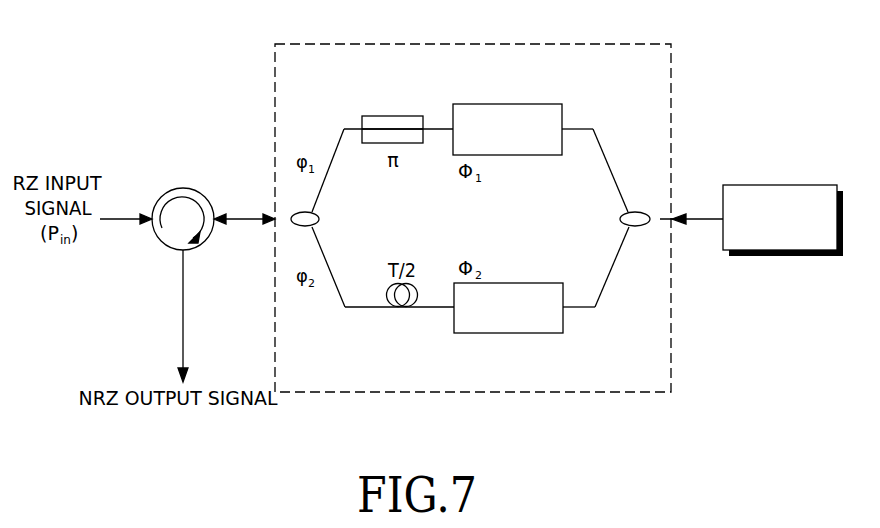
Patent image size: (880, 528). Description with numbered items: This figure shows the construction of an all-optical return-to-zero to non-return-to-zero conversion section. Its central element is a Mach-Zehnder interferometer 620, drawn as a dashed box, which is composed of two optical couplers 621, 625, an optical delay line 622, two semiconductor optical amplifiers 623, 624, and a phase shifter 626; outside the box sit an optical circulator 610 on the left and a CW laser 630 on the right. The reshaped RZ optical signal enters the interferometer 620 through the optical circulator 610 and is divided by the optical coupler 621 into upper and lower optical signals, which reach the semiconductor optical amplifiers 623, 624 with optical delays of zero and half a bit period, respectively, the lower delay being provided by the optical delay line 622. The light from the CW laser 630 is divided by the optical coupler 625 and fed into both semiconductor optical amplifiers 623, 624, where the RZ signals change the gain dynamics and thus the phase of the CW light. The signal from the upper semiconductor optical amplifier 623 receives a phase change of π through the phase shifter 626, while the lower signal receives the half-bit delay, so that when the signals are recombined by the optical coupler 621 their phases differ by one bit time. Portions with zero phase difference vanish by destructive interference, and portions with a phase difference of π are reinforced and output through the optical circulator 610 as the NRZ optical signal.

The optical circulator 610 is at (183, 188).
The Mach-Zehnder interferometer 620 is at (603, 44).
The optical coupler 621 is at (320, 219).
The optical delay line 622 is at (405, 309).
The semiconductor optical amplifier 623 is at (508, 104).
The semiconductor optical amplifier 624 is at (510, 334).
The optical coupler 625 is at (619, 219).
The phase shifter 626 is at (368, 115).
The CW laser 630 is at (777, 185).